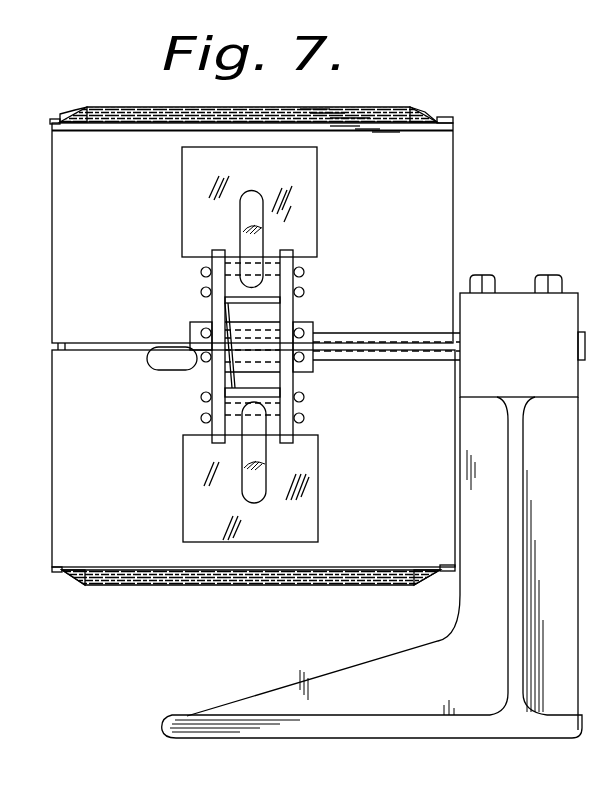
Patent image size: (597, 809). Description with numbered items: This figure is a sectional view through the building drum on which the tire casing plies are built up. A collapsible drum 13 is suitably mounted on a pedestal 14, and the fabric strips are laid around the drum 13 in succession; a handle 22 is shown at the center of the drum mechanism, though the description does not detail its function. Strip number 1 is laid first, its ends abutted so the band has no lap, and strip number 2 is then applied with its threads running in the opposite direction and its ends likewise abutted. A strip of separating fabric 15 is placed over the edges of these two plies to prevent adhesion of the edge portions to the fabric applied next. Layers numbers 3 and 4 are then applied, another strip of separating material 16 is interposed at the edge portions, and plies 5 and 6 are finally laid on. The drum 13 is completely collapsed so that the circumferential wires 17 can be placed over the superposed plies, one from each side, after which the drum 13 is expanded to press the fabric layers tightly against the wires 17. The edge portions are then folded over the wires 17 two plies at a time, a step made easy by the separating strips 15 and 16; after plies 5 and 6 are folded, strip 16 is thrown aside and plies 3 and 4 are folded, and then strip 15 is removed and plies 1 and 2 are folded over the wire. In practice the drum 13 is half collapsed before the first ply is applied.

The strip number 1 is at (366, 125).
The strip number 2 is at (382, 125).
The layer number 3 is at (348, 126).
The layer number 4 is at (316, 110).
The ply 5 is at (331, 109).
The ply 6 is at (352, 109).
The collapsible drum 13 is at (63, 462).
The pedestal 14 is at (420, 650).
The strip of separating fabric 15 is at (60, 119).
The strip of separating material 16 is at (74, 116).
The circumferential wires 17 is at (120, 108).
The handle 22 is at (175, 358).